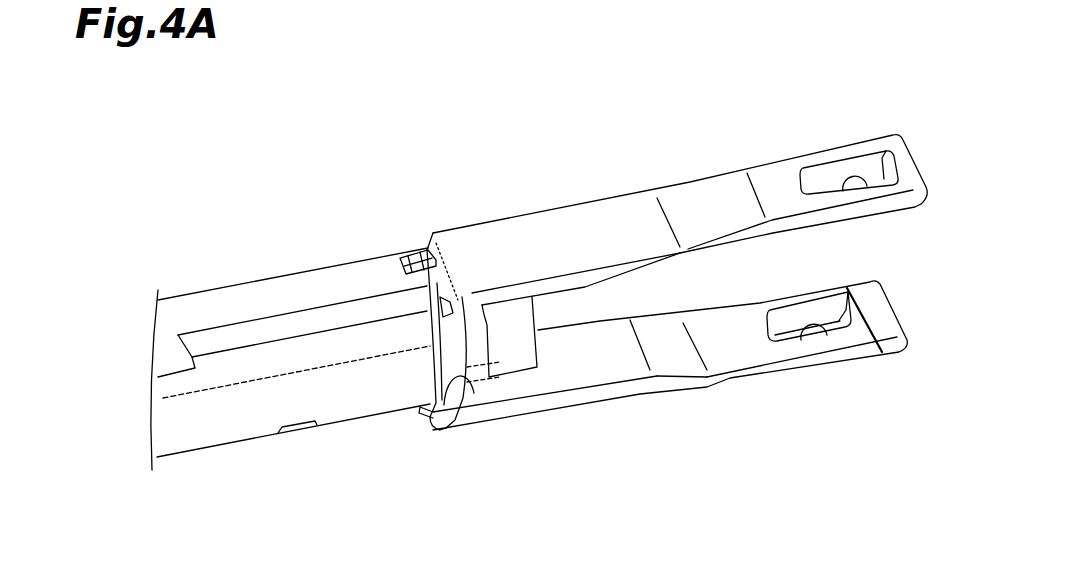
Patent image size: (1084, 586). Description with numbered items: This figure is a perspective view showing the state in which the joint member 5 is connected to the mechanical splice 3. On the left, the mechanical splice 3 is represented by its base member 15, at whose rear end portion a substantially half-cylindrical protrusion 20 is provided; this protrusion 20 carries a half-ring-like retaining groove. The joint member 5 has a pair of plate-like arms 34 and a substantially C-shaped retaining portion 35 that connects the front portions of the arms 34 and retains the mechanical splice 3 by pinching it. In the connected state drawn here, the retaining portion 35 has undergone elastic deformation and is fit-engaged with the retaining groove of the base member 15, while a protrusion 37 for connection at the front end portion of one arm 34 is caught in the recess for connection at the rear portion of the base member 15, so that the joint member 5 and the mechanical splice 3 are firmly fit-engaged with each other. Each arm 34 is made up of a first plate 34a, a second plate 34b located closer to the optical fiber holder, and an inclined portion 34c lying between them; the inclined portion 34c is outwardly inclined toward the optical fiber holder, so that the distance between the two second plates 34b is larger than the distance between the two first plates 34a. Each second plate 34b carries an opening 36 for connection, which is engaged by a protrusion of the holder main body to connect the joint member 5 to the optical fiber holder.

The mechanical splice 3 is at (290, 317).
The joint member 5 is at (673, 281).
The base member 15 is at (307, 288).
The protrusion 20 is at (508, 362).
The arms 34 is at (673, 298).
The first plate 34a is at (496, 228).
The second plate 34b is at (800, 272).
The inclined portion 34c is at (707, 190).
The retaining portion 35 is at (444, 404).
The opening for connection 36 is at (867, 188).
The protrusion for connection 37 is at (427, 252).